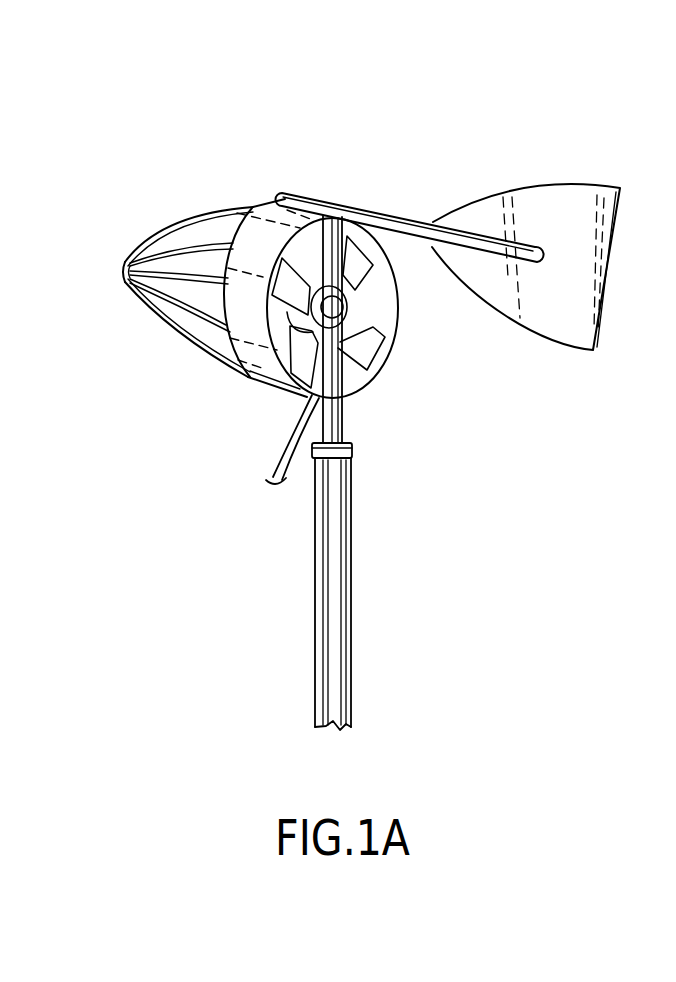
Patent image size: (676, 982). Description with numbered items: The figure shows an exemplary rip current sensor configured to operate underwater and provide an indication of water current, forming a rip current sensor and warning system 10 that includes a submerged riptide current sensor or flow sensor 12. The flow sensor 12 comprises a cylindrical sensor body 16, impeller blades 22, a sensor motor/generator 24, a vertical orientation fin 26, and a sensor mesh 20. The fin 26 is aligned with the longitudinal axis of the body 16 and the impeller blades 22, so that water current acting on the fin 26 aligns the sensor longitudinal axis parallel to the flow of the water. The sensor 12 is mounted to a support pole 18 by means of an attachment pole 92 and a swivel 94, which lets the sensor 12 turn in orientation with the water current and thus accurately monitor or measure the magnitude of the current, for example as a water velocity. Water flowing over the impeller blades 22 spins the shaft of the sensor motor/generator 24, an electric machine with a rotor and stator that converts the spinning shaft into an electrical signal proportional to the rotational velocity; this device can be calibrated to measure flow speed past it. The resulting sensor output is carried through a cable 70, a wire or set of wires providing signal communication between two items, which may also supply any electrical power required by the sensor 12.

The rip current sensor and warning system 10 is at (175, 170).
The flow sensor 12 is at (212, 392).
The cylindrical sensor body 16 is at (263, 232).
The support pole 18 is at (338, 660).
The sensor mesh 20 is at (147, 322).
The impeller blades 22 is at (368, 350).
The sensor motor/generator 24 is at (345, 313).
The vertical orientation fin 26 is at (557, 198).
The cable 70 is at (278, 461).
The attachment pole 92 is at (343, 431).
The swivel 94 is at (352, 455).